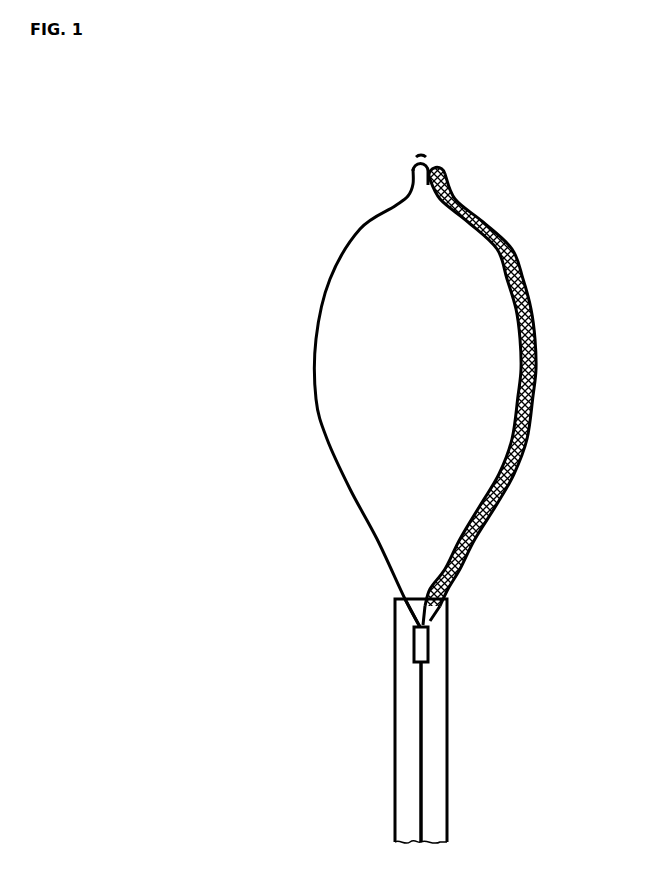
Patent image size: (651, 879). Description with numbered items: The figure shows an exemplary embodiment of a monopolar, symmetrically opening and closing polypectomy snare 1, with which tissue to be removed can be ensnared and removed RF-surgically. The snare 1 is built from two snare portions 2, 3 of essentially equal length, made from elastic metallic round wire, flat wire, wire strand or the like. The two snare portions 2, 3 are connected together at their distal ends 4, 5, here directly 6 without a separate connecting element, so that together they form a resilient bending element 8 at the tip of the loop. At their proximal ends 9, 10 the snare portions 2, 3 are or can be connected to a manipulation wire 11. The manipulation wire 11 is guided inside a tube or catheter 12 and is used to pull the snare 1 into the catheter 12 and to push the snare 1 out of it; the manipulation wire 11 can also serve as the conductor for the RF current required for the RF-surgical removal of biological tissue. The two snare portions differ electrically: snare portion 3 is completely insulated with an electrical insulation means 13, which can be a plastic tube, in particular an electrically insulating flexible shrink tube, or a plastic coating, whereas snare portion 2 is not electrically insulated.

The snare 1 is at (412, 379).
The snare portion 2 is at (313, 345).
The snare portion 3 is at (538, 338).
The distal end 4 is at (410, 180).
The distal end 5 is at (442, 180).
The direct connection 6 is at (422, 150).
The resilient bending element 8 is at (434, 202).
The proximal end 9 is at (432, 625).
The proximal end 10 is at (414, 630).
The manipulation wire 11 is at (425, 737).
The catheter 12 is at (394, 726).
The electrical insulation means 13 is at (500, 508).